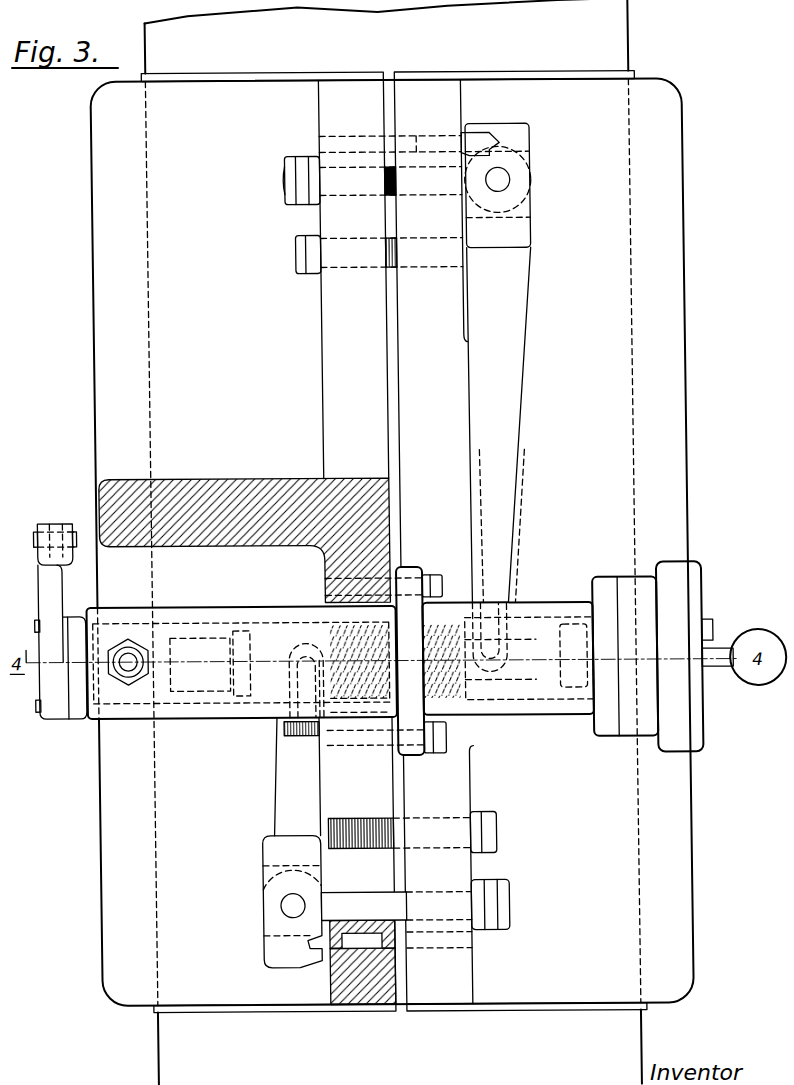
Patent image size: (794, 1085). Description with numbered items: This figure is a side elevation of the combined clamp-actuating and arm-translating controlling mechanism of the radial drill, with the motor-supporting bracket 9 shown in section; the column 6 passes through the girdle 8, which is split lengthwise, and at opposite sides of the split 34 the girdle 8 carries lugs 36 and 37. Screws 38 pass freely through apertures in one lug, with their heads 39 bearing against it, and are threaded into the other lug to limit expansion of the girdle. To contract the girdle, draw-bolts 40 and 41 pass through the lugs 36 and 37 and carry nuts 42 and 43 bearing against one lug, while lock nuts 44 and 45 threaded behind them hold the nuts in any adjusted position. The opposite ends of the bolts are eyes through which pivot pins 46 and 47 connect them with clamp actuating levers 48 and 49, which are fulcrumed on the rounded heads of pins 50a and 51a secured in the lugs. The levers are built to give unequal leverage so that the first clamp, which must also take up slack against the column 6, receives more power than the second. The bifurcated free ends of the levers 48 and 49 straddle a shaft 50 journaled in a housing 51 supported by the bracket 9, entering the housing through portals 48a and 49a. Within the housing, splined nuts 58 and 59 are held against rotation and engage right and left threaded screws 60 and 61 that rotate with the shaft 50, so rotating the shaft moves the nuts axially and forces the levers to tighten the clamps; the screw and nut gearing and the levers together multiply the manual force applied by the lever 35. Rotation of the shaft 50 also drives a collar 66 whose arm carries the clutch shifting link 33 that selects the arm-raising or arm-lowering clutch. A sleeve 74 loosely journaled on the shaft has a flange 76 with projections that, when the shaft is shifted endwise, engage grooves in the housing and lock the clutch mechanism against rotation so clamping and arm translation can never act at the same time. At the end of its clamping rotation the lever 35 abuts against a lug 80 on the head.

The tube 6 is at (631, 43).
The housing casing 8 is at (684, 404).
The motor-supporting bracket 9 is at (323, 558).
The clutch shifting link 33 is at (51, 524).
The split 34 is at (386, 342).
The actuating lever 35 is at (727, 668).
The lug 36 is at (320, 125).
The lug 37 is at (462, 104).
The screw 38 is at (396, 270).
The head 39 is at (305, 278).
The draw-bolt 40 is at (396, 195).
The draw-bolt 41 is at (396, 907).
The nut 42 is at (312, 208).
The nut 43 is at (480, 934).
The lock nut 44 is at (288, 206).
The lock nut 45 is at (501, 928).
The pivot pin 46 is at (511, 180).
The pivot pin 47 is at (283, 905).
The clamp actuating lever 48 is at (518, 371).
The lever end 48a is at (540, 605).
The clamp actuating lever 49 is at (268, 805).
The portal 49a is at (283, 720).
The shaft 50 is at (535, 670).
The pin 50a is at (478, 138).
The housing 51 is at (228, 608).
The pin 51a is at (325, 948).
The nut 58 is at (448, 700).
The nut 59 is at (360, 704).
The screw 60 is at (466, 680).
The screw 61 is at (375, 622).
The collar 66 is at (58, 717).
The sleeve 74 is at (197, 690).
The flange 76 is at (236, 696).
The lug 80 is at (707, 627).